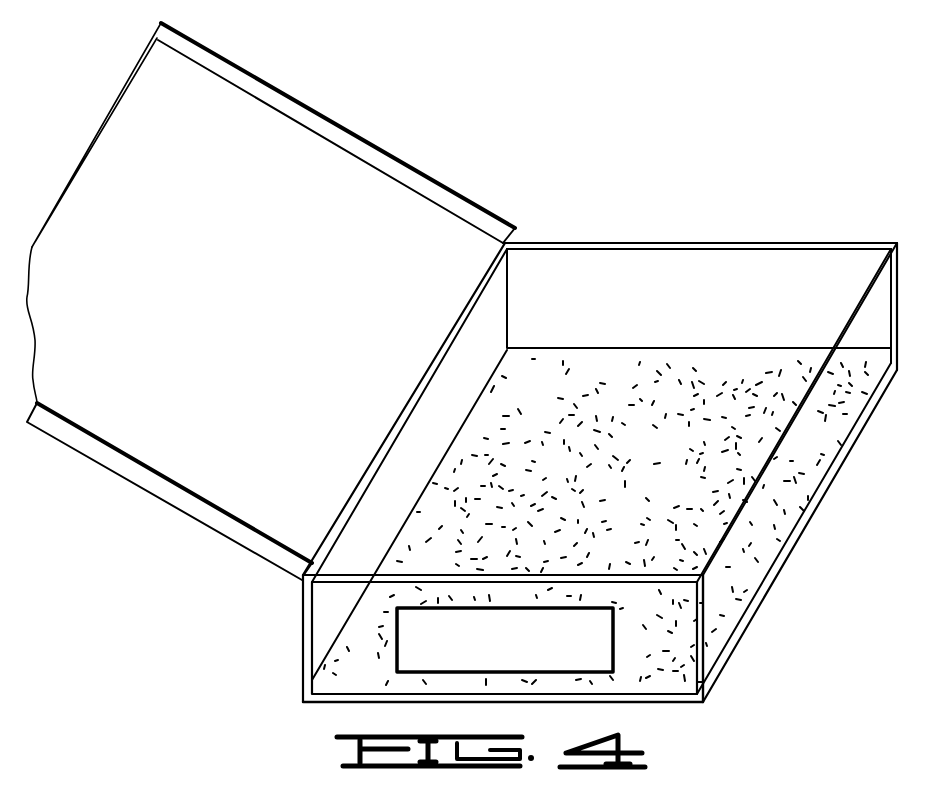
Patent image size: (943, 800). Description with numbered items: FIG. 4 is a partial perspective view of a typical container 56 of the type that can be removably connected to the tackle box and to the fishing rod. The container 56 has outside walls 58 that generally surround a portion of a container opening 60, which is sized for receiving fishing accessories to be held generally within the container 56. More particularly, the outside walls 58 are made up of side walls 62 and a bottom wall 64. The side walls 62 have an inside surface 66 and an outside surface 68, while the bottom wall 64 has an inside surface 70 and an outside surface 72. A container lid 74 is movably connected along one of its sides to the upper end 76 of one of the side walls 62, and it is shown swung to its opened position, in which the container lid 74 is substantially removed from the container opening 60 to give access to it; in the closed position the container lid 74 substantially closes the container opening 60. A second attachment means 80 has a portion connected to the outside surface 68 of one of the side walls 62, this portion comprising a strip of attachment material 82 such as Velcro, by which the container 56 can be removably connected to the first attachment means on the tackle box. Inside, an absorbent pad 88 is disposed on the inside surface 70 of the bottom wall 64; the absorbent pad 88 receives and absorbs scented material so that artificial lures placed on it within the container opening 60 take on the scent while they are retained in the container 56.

The container 56 is at (598, 242).
The outside walls 58 is at (830, 240).
The container opening 60 is at (645, 285).
The side walls 62 is at (723, 262).
The bottom wall 64 is at (788, 560).
The inside surface 66 is at (537, 268).
The outside surface 68 is at (787, 240).
The inside surface 70 is at (856, 424).
The outside surface 72 is at (840, 477).
The container lid 74 is at (300, 145).
The upper end 76 is at (707, 240).
The second attachment means 80 is at (578, 655).
The strip of attachment material 82 is at (405, 646).
The absorbent pad 88 is at (474, 440).